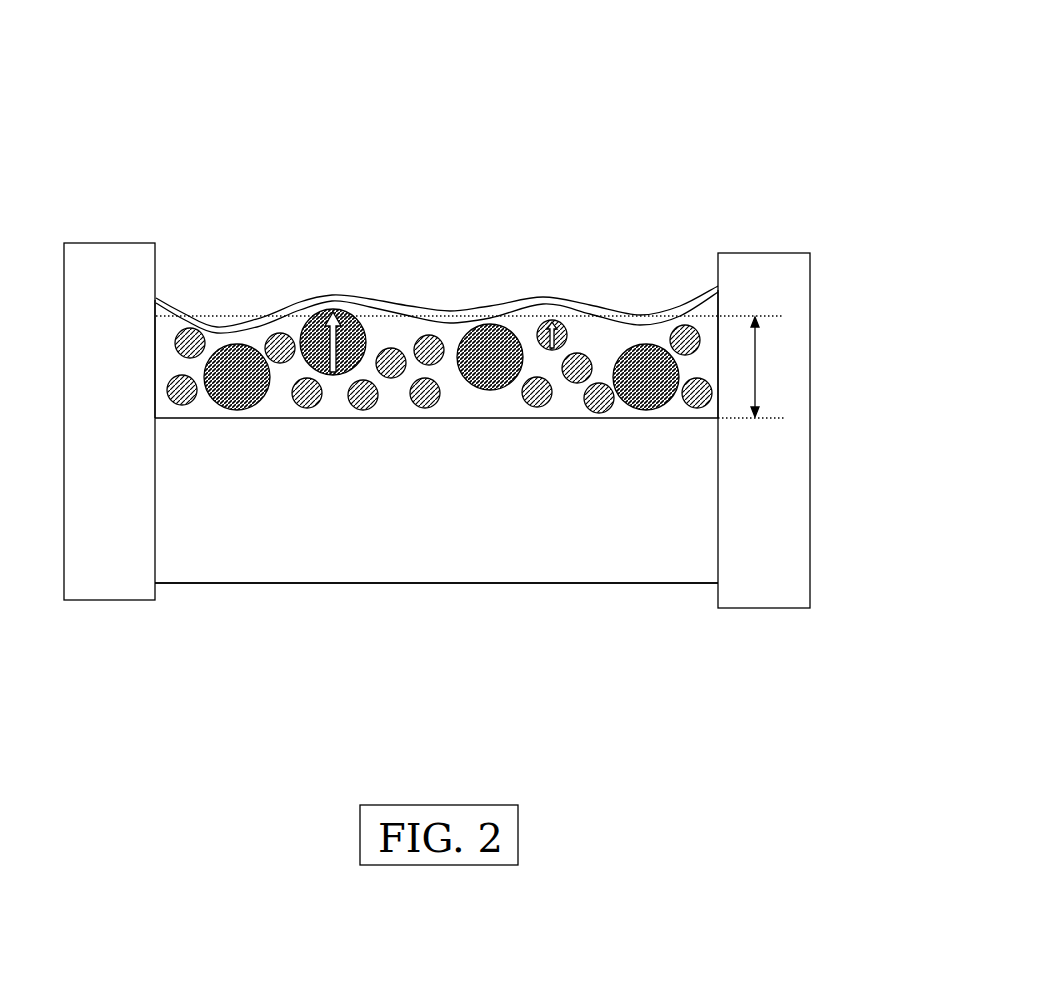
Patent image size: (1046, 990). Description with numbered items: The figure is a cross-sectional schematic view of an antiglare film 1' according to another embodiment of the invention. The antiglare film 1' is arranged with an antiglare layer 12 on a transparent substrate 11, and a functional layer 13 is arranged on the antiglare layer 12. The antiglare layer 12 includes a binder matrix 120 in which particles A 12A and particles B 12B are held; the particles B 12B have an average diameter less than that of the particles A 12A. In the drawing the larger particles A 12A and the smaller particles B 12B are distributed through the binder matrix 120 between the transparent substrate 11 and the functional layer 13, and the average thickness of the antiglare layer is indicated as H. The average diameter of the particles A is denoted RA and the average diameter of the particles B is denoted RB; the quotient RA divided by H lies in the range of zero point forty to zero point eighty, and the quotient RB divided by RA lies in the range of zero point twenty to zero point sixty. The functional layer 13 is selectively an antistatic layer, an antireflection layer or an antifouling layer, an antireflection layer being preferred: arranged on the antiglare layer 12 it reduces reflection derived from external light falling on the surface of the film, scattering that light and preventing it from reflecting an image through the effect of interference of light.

The antiglare film 1' is at (436, 300).
The transparent substrate 11 is at (675, 485).
The antiglare layer 12 is at (810, 293).
The particles A 12A is at (355, 317).
The particles B 12B is at (563, 324).
The binder matrix 120 is at (623, 340).
The functional layer 13 is at (722, 283).
The average thickness of the antiglare layer H is at (767, 367).
The average diameter of the particles A RA is at (303, 310).
The average diameter of the particles B RB is at (538, 332).